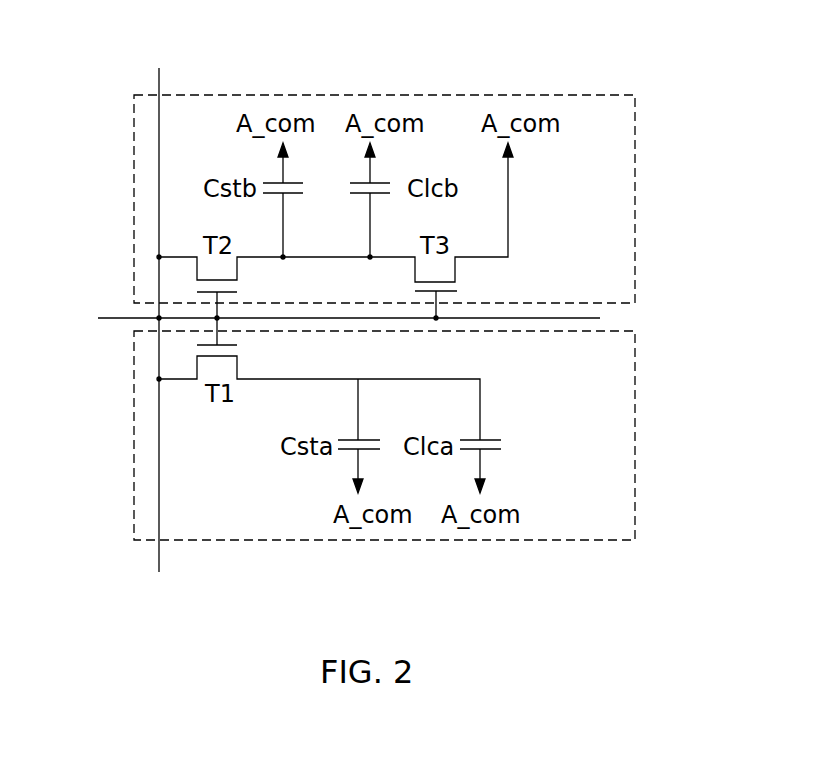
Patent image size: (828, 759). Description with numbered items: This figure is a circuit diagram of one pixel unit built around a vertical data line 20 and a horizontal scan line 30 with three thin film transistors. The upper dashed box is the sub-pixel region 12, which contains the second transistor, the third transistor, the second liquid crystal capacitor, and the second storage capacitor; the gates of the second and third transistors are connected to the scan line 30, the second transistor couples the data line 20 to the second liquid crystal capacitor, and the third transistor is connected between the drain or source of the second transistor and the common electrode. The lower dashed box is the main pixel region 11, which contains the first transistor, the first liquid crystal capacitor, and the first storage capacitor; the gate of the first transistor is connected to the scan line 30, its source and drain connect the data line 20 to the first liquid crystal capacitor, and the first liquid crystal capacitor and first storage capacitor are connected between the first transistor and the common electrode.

The data line 20 is at (158, 152).
The scan line 30 is at (126, 317).
The sub-pixel region 12 is at (612, 187).
The main pixel region 11 is at (613, 387).